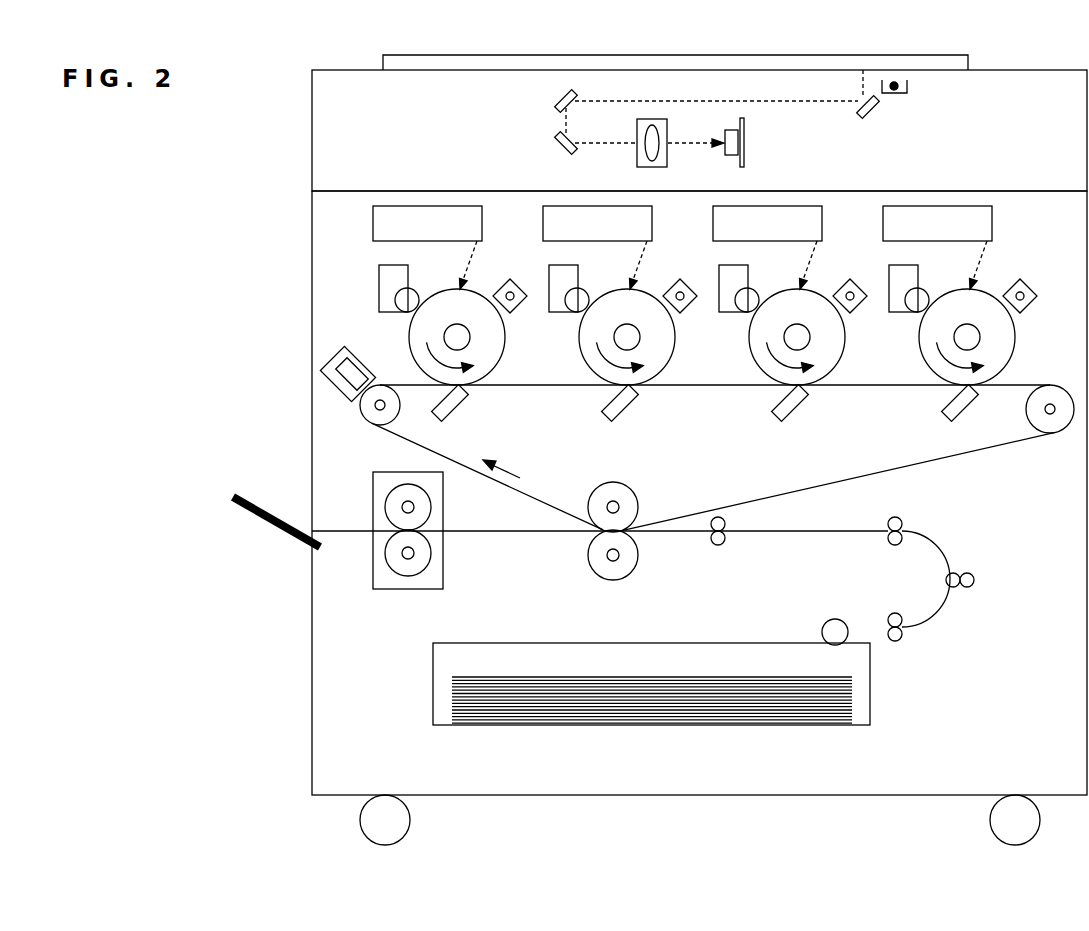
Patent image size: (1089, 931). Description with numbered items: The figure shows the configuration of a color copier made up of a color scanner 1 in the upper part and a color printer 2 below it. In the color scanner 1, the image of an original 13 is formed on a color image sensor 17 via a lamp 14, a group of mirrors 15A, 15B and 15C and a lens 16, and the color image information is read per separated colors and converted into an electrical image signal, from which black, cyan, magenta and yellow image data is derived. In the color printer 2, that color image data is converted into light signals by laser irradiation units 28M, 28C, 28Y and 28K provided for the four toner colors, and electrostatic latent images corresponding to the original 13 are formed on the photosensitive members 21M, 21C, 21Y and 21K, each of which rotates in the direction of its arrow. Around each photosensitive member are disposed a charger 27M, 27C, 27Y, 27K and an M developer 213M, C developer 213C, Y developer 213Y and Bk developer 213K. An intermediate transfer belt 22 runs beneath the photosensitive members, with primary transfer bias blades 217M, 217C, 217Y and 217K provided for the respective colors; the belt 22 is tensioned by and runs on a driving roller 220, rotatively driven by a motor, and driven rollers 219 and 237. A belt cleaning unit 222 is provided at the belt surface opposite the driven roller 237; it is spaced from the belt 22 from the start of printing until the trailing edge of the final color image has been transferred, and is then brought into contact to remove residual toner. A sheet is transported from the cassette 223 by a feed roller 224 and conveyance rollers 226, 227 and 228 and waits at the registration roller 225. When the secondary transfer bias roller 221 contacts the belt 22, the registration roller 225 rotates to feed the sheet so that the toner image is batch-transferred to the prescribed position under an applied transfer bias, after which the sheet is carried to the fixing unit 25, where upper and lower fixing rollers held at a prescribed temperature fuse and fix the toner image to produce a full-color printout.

The color scanner 1 is at (312, 126).
The color printer 2 is at (312, 238).
The original 13 is at (972, 62).
The lamp 14 is at (908, 88).
The mirror 15A is at (876, 114).
The mirror 15B is at (556, 101).
The mirror 15C is at (556, 143).
The lens 16 is at (668, 150).
The color image sensor 17 is at (746, 143).
The laser irradiation unit 28M is at (384, 232).
The laser irradiation unit 28C is at (554, 232).
The laser irradiation unit 28Y is at (724, 232).
The laser irradiation unit 28K is at (894, 232).
The M developer 213M is at (386, 285).
The C developer 213C is at (556, 285).
The Y developer 213Y is at (726, 285).
The Bk developer 213K is at (896, 284).
The charger 27M is at (520, 306).
The charger 27C is at (690, 306).
The charger 27Y is at (860, 306).
The charger 27K is at (1028, 288).
The photosensitive member 21M is at (488, 360).
The photosensitive member 21C is at (658, 360).
The photosensitive member 21Y is at (828, 360).
The photosensitive member 21K is at (1000, 348).
The primary transfer bias blade 217M is at (455, 410).
The primary transfer bias blade 217C is at (625, 412).
The primary transfer bias blade 217Y is at (790, 415).
The primary transfer bias blade 217K is at (950, 412).
The intermediate transfer belt 22 is at (863, 486).
The driven roller 237 is at (372, 410).
The driving roller 220 is at (1060, 432).
The belt cleaning unit 222 is at (335, 362).
The driven roller 219 is at (632, 500).
The secondary transfer bias roller 221 is at (613, 572).
The fixing unit 25 is at (408, 580).
The registration roller 225 is at (718, 547).
The conveyance roller 226 is at (903, 522).
The conveyance roller 227 is at (976, 580).
The conveyance roller 228 is at (898, 637).
The feed roller 224 is at (835, 618).
The cassette 223 is at (436, 693).